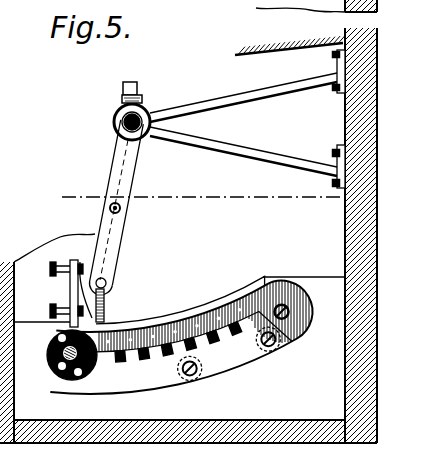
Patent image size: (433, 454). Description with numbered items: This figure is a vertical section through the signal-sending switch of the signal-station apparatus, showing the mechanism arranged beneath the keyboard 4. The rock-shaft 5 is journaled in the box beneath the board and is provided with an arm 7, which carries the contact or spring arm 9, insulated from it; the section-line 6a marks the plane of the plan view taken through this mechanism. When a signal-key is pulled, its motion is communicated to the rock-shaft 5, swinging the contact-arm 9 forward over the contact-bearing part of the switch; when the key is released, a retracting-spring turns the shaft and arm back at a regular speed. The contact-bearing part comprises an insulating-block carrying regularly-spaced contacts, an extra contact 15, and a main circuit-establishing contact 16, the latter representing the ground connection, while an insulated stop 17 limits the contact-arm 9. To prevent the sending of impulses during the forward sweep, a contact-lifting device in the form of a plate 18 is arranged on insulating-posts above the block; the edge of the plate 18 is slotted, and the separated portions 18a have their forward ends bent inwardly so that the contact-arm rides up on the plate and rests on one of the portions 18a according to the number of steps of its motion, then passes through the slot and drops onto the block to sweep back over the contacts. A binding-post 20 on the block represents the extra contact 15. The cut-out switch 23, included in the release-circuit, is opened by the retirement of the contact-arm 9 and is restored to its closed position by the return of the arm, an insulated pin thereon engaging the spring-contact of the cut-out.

The keyboard 4 is at (285, 85).
The rock-shaft 5 is at (141, 116).
The axis line 6a is at (204, 198).
The arm 7 is at (124, 231).
The contact or spring arm 9 is at (96, 326).
The extra contact 15 is at (100, 348).
The main circuit-establishing contact 16 is at (152, 306).
The insulated stop 17 is at (52, 352).
The plate 18 is at (243, 311).
The slotted plate portions 18a is at (164, 333).
The binding-post 20 is at (72, 381).
The cut-out switch 23 is at (70, 283).